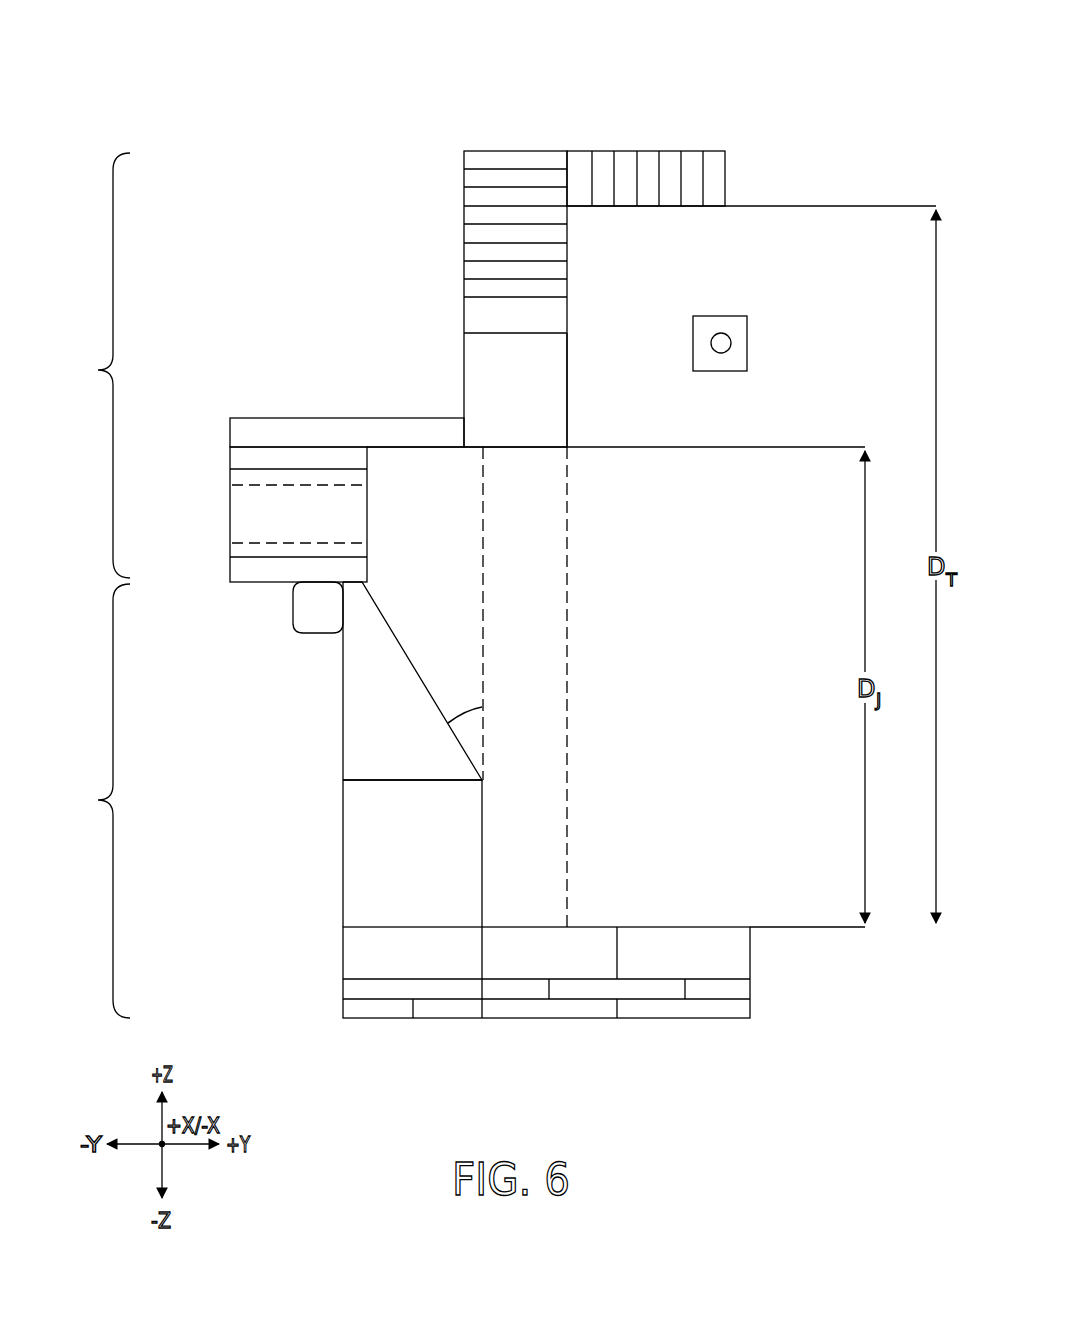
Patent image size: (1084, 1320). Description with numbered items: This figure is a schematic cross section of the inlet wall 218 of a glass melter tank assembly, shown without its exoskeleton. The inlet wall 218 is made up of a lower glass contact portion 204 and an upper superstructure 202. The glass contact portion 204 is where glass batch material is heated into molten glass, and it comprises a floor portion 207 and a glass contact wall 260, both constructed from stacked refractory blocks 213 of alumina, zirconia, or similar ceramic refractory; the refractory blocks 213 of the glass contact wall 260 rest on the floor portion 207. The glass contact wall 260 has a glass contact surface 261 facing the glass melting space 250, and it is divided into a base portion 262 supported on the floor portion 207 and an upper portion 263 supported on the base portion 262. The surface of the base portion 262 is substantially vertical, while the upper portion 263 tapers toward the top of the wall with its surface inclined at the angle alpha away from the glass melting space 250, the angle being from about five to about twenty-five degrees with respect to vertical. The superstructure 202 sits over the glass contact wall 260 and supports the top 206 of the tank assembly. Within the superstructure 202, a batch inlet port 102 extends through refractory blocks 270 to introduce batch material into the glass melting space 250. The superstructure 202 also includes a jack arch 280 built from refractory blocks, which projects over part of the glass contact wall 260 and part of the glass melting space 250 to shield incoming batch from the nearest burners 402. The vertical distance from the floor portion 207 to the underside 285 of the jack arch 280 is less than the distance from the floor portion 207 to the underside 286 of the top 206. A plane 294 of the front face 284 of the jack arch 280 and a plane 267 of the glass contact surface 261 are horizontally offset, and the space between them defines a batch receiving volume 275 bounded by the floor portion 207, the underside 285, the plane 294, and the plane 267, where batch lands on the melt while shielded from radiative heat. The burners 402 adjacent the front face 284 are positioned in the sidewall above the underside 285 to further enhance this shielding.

The batch inlet port 102 is at (321, 528).
The superstructure 202 is at (88, 365).
The glass contact portion 204 is at (88, 801).
The top 206 is at (591, 143).
The floor portion 207 is at (322, 1002).
The refractory block 213 is at (338, 861).
The inlet wall 218 is at (569, 225).
The glass melting space 250 is at (680, 756).
The glass contact wall 260 is at (293, 755).
The glass contact surface 261 is at (483, 845).
The base portion 262 is at (437, 872).
The upper portion 263 is at (416, 729).
The plane of the glass contact surface 267 is at (484, 574).
The refractory blocks 270 is at (230, 510).
The batch receiving volume 275 is at (548, 667).
The jack arch 280 is at (440, 384).
The front face 284 is at (568, 409).
The underside of the jack arch 285 is at (525, 449).
The underside of the top 286 is at (603, 207).
The plane of the front face 294 is at (568, 574).
The burner 402 is at (722, 316).